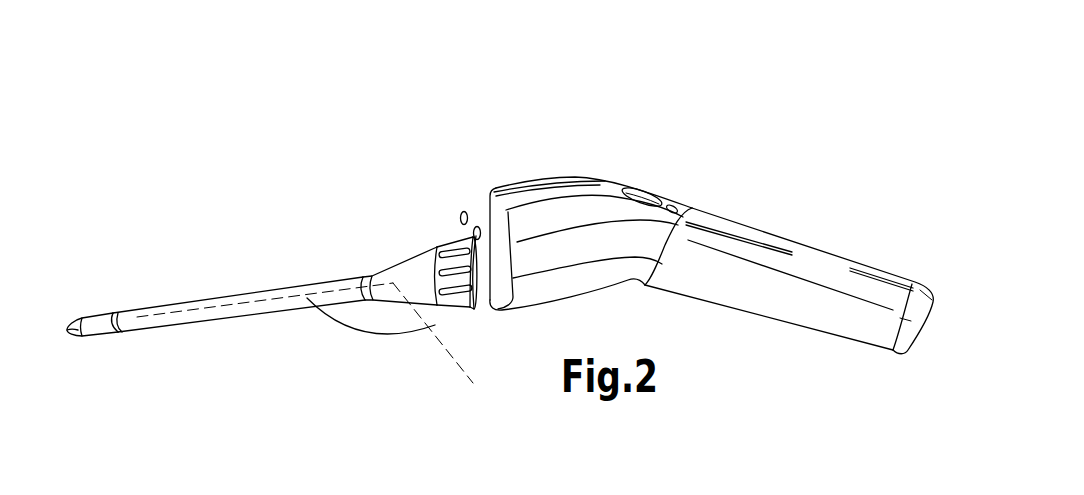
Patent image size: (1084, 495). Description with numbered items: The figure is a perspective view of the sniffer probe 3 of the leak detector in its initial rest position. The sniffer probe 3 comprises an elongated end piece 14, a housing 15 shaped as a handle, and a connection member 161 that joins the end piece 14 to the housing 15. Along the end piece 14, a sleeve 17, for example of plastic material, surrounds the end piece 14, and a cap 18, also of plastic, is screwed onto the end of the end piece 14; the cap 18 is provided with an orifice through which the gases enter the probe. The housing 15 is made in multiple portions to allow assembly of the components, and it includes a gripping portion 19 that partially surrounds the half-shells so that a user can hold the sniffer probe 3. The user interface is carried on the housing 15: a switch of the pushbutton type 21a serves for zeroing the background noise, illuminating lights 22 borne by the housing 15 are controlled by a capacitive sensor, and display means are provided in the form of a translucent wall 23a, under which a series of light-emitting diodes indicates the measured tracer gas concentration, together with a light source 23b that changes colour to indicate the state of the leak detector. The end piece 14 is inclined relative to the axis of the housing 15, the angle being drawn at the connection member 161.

The sniffer probe 3 is at (216, 216).
The end piece 14 is at (224, 343).
The sleeve 17 is at (159, 301).
The cap 18 is at (96, 327).
The connection member 161 is at (386, 250).
The housing 15 is at (613, 135).
The illuminating lights 22 is at (462, 229).
The translucent wall 23a is at (515, 197).
The pushbutton switch 21a is at (638, 195).
The light source 23b is at (679, 201).
The gripping portion 19 is at (780, 229).